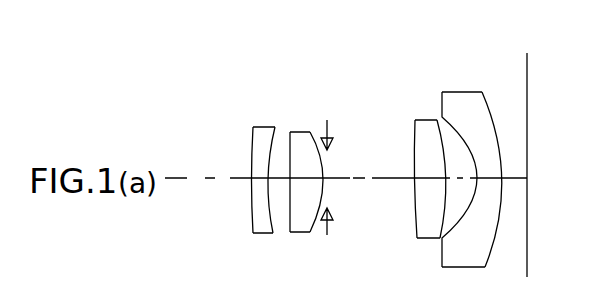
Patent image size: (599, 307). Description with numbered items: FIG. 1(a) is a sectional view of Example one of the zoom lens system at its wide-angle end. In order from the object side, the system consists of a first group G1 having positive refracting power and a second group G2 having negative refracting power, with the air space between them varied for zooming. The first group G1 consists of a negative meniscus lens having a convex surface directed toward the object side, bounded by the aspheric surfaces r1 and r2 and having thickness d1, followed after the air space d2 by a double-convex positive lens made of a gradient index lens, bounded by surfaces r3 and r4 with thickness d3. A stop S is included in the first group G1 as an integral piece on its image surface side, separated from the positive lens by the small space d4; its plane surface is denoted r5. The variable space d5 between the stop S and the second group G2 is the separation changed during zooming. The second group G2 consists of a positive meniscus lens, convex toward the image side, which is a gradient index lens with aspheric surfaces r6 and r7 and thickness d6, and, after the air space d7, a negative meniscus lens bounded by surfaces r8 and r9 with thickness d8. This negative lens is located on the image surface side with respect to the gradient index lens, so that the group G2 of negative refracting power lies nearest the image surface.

The first group G1 is at (330, 63).
The second group G2 is at (495, 63).
The stop S is at (341, 144).
The radius of curvature of first lens surface r1 is at (253, 150).
The radius of curvature of second lens surface r2 is at (275, 130).
The radius of curvature of third lens surface r3 is at (290, 150).
The radius of curvature of fourth lens surface r4 is at (313, 137).
The radius of curvature of fifth surface r5 is at (327, 158).
The radius of curvature of sixth lens surface r6 is at (413, 150).
The radius of curvature of seventh lens surface r7 is at (441, 121).
The radius of curvature of eighth lens surface r8 is at (444, 118).
The radius of curvature of ninth lens surface r9 is at (491, 118).
The space between first and second lens surfaces d1 is at (253, 194).
The space between second and third lens surfaces d2 is at (273, 186).
The space between third and fourth lens surfaces d3 is at (303, 152).
The space between fourth and fifth surfaces d4 is at (325, 186).
The space between fifth and sixth surfaces d5 is at (364, 194).
The space between sixth and seventh lens surfaces d6 is at (430, 180).
The space between seventh and eighth lens surfaces d7 is at (458, 195).
The space between eighth and ninth lens surfaces d8 is at (485, 192).